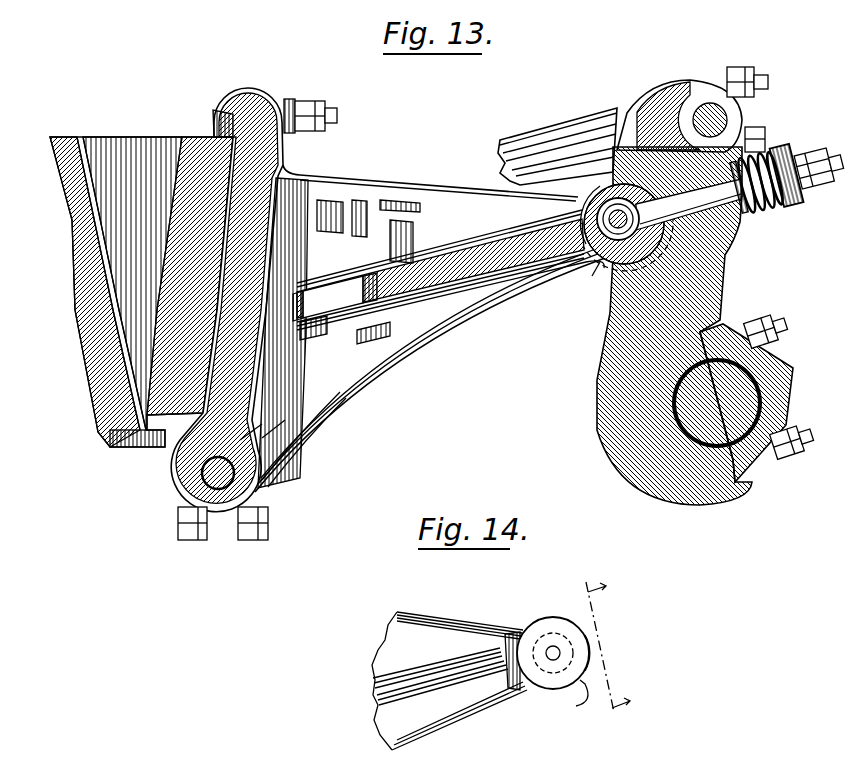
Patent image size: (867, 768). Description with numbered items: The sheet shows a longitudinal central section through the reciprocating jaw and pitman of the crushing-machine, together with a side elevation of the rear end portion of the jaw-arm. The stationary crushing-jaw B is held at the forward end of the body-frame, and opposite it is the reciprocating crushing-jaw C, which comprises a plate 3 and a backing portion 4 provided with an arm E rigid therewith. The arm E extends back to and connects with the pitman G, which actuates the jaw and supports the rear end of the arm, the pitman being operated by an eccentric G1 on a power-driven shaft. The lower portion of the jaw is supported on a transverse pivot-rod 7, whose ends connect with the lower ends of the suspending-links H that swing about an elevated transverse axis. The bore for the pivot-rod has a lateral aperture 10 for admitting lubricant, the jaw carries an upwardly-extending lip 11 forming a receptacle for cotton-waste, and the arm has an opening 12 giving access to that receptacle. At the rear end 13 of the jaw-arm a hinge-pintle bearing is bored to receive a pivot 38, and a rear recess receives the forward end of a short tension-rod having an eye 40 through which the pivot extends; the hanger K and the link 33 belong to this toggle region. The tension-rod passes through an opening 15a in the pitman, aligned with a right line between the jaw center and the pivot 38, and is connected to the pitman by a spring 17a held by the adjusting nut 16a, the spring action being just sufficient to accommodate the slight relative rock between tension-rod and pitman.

In FIG. 13, the crushing-jaw B is at (139, 275).
In FIG. 13, the plate 3 is at (150, 137).
In FIG. 13, the reciprocating crushing-jaw C is at (254, 291).
In FIG. 13, the backing portion 4 is at (297, 160).
In FIG. 13, the pivot-rod 7 is at (202, 473).
In FIG. 13, the suspending-links H is at (182, 499).
In FIG. 13, the arm E is at (422, 318).
In FIG. 14, the arm E is at (449, 667).
In FIG. 13, the lateral aperture 10 is at (253, 423).
In FIG. 13, the lip 11 is at (280, 420).
In FIG. 13, the opening 12 is at (340, 292).
In FIG. 13, the eye 40 is at (585, 262).
In FIG. 13, the hanger K is at (633, 126).
In FIG. 13, the pitman G is at (690, 316).
In FIG. 13, the eccentric G1 is at (738, 322).
In FIG. 13, the pivot 38 is at (585, 214).
In FIG. 14, the pivot 38 is at (551, 648).
In FIG. 13, the link rod 33 is at (669, 202).
In FIG. 13, the rear end of the jaw-arm 13 is at (592, 279).
In FIG. 14, the rear end of the jaw-arm 13 is at (569, 698).
In FIG. 13, the opening 15a is at (735, 243).
In FIG. 13, the spring 17a is at (772, 160).
In FIG. 13, the adjusting nut 16a is at (805, 165).